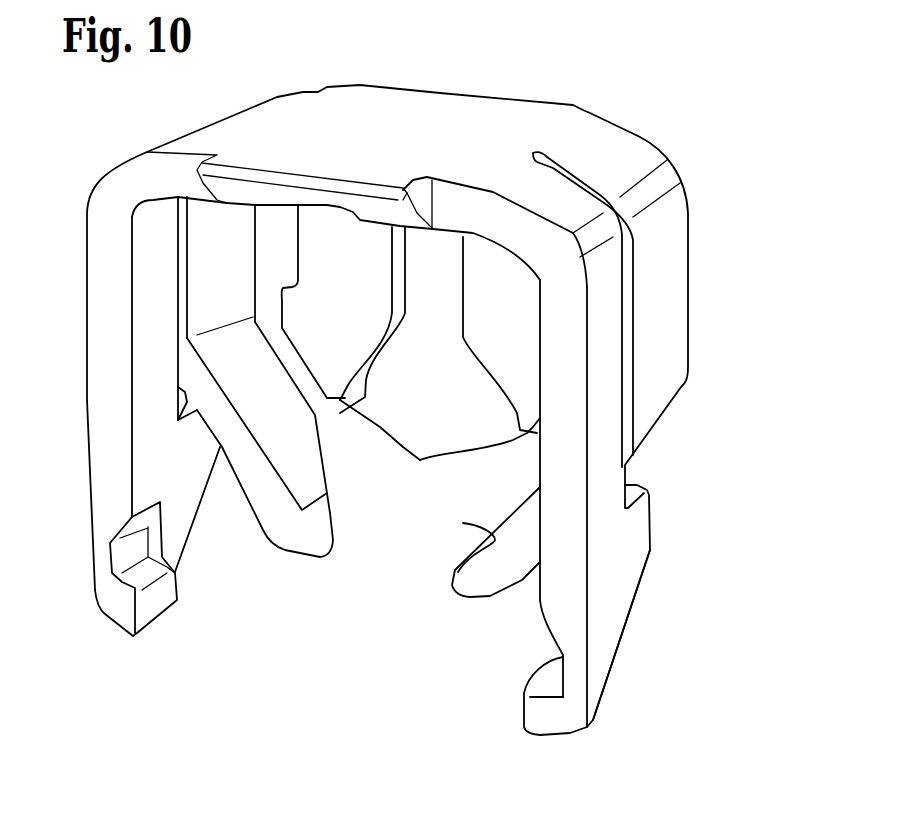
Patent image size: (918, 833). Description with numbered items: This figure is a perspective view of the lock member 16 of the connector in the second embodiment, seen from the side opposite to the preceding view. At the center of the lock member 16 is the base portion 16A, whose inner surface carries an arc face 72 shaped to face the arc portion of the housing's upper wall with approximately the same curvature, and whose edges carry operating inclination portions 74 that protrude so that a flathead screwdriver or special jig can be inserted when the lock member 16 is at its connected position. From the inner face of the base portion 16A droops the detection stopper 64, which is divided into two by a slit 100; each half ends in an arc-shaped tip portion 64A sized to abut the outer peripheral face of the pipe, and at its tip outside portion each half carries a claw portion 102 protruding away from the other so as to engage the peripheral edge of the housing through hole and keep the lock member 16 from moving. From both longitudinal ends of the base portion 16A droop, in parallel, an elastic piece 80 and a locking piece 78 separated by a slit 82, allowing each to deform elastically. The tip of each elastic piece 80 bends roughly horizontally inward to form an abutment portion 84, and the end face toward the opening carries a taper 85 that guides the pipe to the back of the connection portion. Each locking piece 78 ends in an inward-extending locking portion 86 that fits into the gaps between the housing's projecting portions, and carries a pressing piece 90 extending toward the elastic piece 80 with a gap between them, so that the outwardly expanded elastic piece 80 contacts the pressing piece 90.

The lock member 16 is at (543, 78).
The base portion 16A is at (367, 107).
The detection stopper 64 is at (480, 369).
The tip portion 64A is at (474, 455).
The arc face 72 is at (475, 237).
The operating inclination portion 74 is at (320, 205).
The locking piece 78 is at (108, 420).
The elastic piece 80 is at (198, 283).
The slit 82 is at (633, 248).
The abutment portion 84 is at (458, 560).
The taper 85 is at (465, 523).
The locking portion 86 is at (157, 607).
The pressing piece 90 is at (188, 487).
The slit 100 is at (400, 270).
The claw portion 102 is at (298, 280).